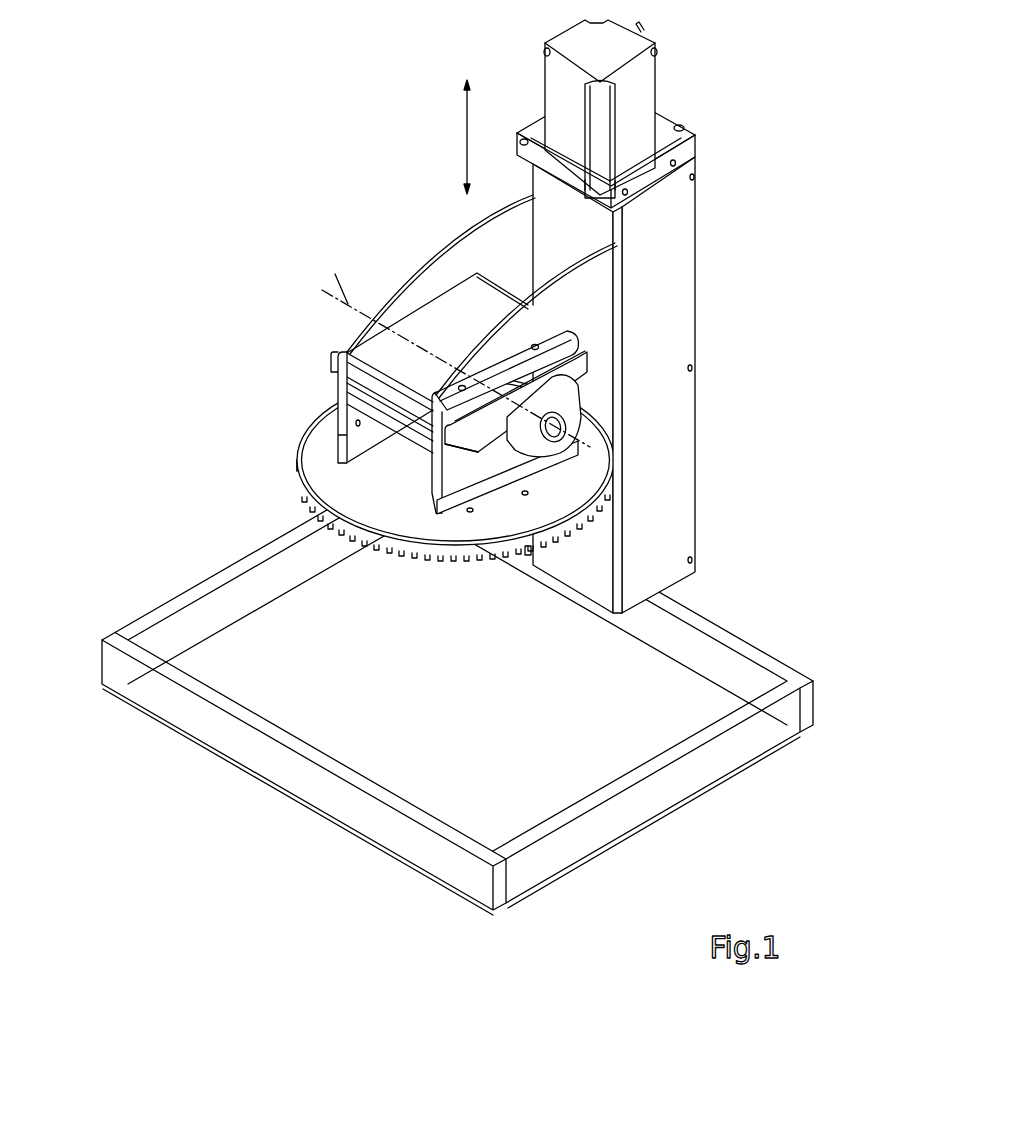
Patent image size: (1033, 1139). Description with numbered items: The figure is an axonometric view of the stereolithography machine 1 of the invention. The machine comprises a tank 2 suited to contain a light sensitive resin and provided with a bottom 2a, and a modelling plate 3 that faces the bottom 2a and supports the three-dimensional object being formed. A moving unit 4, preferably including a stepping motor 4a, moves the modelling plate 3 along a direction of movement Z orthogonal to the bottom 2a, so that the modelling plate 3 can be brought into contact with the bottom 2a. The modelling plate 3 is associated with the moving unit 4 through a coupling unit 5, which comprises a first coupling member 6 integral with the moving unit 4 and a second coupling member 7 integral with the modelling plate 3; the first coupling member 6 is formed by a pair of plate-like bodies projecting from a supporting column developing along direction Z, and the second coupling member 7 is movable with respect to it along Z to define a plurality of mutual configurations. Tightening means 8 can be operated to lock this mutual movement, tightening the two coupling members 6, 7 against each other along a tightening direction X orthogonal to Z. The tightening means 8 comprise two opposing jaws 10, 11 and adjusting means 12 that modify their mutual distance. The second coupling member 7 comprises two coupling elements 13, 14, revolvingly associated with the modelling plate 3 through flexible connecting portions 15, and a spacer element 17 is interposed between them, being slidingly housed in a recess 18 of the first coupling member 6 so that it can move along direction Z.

The stereolithography machine 1 is at (446, 463).
The tank 2 is at (446, 685).
The bottom 2a is at (205, 655).
The modelling plate 3 is at (323, 478).
The moving unit 4 is at (633, 312).
The stepping motor 4a is at (640, 100).
The coupling unit 5 is at (597, 390).
The first coupling member 6 is at (455, 266).
The second coupling member 7 is at (494, 522).
The tightening means 8 is at (455, 468).
The jaw 10 is at (343, 355).
The jaw 11 is at (568, 366).
The adjusting means 12 is at (560, 452).
The coupling element 13 is at (338, 378).
The coupling element 14 is at (565, 348).
The connecting portion 15 is at (352, 445).
The spacer element 17 is at (403, 417).
The recess 18 is at (370, 372).